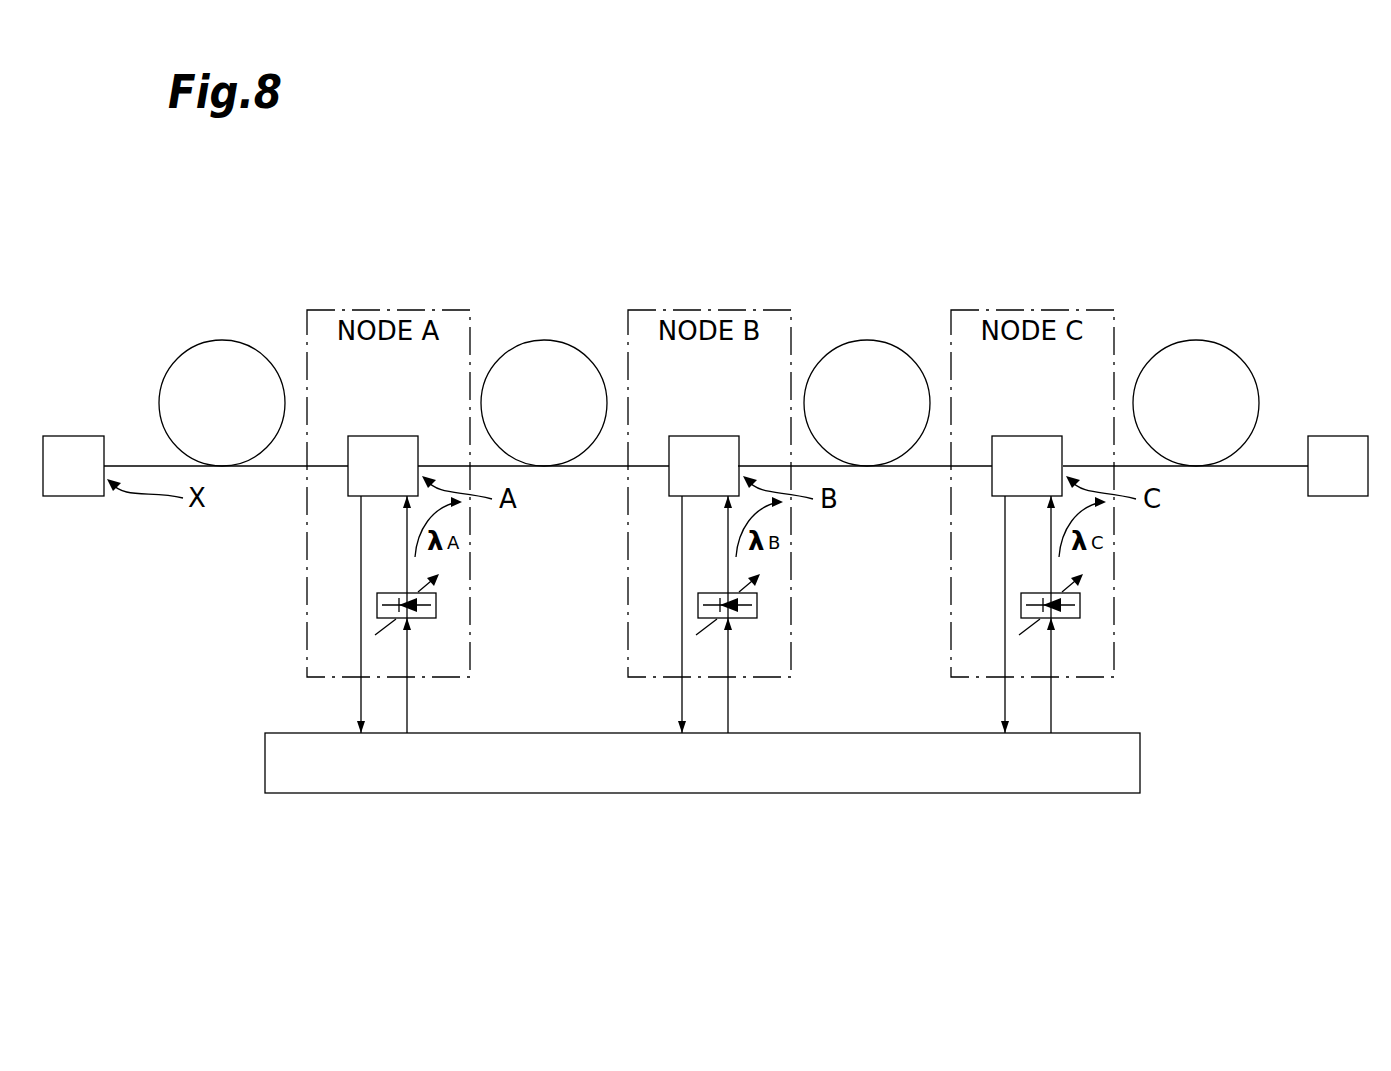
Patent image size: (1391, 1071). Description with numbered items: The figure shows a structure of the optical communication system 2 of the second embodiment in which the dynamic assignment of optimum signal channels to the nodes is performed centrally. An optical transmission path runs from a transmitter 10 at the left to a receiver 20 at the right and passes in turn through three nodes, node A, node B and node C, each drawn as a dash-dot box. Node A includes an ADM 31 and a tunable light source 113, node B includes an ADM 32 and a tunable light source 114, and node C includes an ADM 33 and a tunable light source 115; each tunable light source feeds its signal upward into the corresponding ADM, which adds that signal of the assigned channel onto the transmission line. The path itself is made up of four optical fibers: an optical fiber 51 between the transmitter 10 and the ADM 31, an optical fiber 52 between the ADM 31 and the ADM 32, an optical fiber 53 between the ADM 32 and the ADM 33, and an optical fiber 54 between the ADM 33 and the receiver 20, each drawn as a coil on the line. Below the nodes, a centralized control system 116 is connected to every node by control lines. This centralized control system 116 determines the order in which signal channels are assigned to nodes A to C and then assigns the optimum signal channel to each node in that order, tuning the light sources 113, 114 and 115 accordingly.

The optical communication system 2 is at (1064, 231).
The transmitter 10 is at (70, 436).
The receiver 20 is at (1338, 436).
The ADM 31 is at (381, 436).
The ADM 32 is at (707, 426).
The ADM 33 is at (1030, 426).
The optical fiber 51 is at (222, 340).
The optical fiber 52 is at (544, 340).
The optical fiber 53 is at (867, 340).
The optical fiber 54 is at (1196, 340).
The tunable light source 113 is at (436, 605).
The tunable light source 114 is at (775, 604).
The tunable light source 115 is at (1098, 604).
The centralized control system 116 is at (1025, 793).